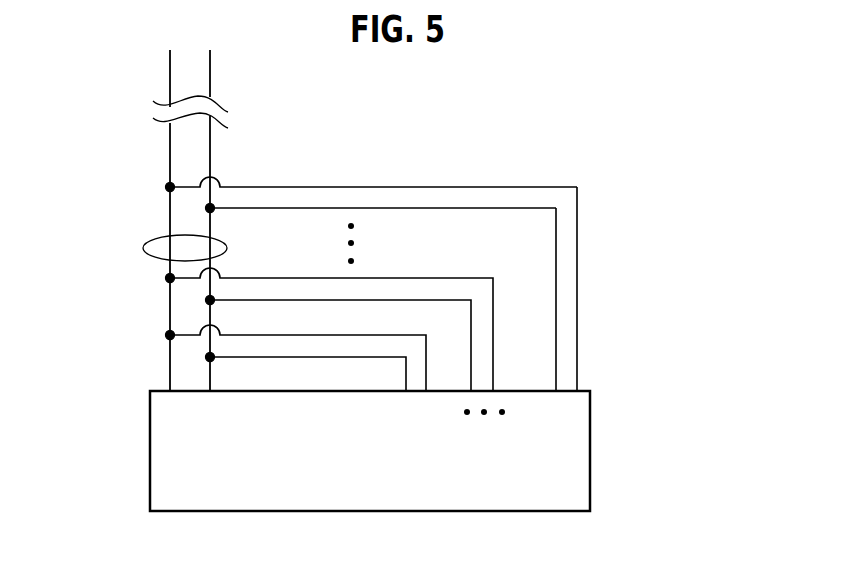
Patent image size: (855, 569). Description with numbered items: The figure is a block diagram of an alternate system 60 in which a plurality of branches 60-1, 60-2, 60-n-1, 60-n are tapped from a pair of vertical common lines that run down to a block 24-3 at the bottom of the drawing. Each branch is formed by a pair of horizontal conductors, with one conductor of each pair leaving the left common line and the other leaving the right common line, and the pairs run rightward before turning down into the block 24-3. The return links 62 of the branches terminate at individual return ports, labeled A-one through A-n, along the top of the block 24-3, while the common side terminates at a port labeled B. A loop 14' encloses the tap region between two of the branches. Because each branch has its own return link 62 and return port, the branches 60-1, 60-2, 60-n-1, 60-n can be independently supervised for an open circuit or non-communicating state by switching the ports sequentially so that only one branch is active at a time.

The alternate system 60 is at (625, 168).
The return links 62 is at (617, 301).
The branch 60-1 is at (147, 195).
The branch 60-2 is at (147, 222).
The branch 60-n-1 is at (147, 291).
The branch 60-n is at (147, 350).
The tap/connection region 14' is at (149, 248).
The decoder/controller block 24-3 is at (393, 464).